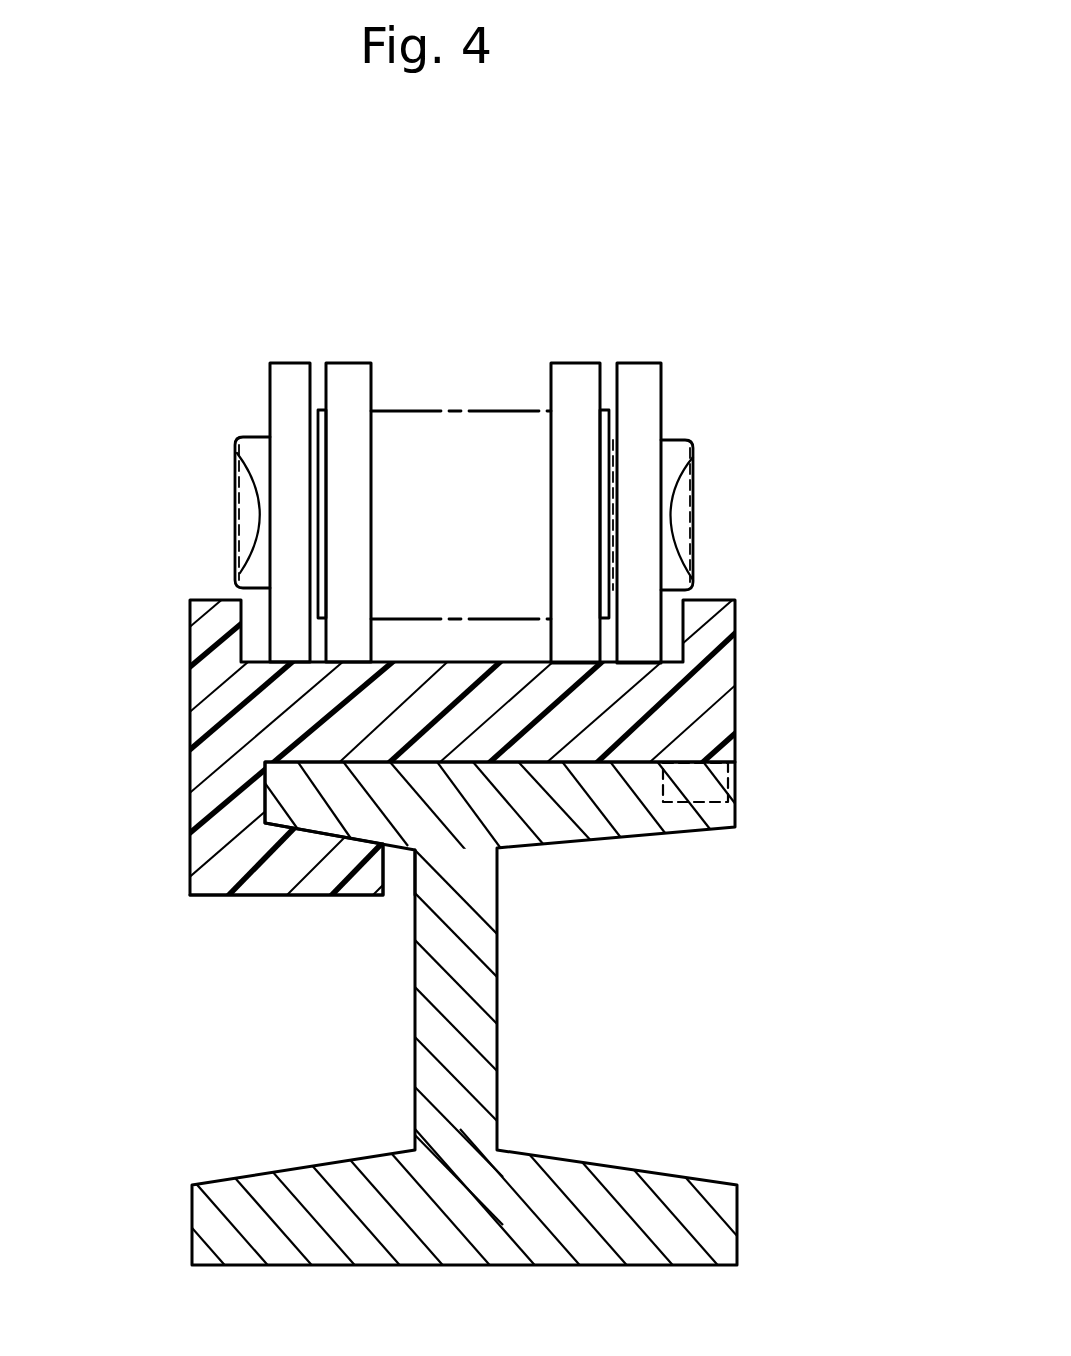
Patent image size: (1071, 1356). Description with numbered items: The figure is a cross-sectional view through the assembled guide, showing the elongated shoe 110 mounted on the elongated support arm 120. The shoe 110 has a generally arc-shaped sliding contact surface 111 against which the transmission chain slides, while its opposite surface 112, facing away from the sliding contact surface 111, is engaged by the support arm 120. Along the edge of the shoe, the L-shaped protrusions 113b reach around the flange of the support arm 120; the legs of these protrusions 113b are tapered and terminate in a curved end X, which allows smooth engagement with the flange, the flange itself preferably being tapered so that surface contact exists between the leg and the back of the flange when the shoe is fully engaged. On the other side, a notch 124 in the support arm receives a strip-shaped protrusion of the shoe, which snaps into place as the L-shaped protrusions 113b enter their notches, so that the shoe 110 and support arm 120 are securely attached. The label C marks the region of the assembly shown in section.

The elongated shoe 110 is at (190, 757).
The arc-shaped sliding contact surface 111 is at (471, 660).
The surface of the shoe 112 is at (540, 795).
The L-shaped protrusion 113b is at (281, 868).
The curved end X is at (388, 868).
The elongated support arm 120 is at (415, 1052).
The notch 124 is at (745, 784).
The roller unit C is at (584, 355).